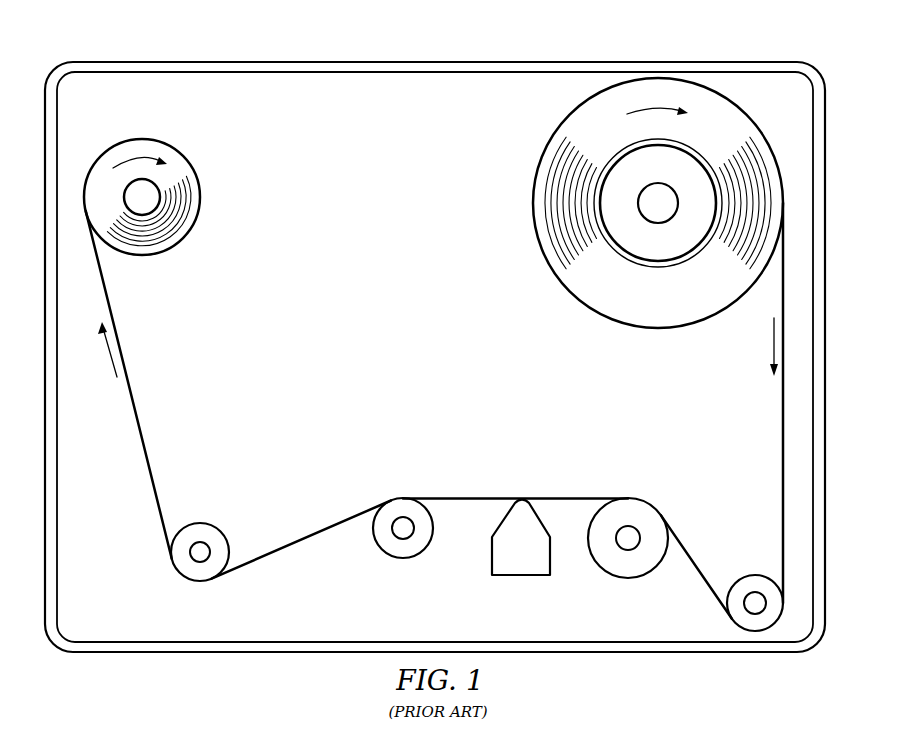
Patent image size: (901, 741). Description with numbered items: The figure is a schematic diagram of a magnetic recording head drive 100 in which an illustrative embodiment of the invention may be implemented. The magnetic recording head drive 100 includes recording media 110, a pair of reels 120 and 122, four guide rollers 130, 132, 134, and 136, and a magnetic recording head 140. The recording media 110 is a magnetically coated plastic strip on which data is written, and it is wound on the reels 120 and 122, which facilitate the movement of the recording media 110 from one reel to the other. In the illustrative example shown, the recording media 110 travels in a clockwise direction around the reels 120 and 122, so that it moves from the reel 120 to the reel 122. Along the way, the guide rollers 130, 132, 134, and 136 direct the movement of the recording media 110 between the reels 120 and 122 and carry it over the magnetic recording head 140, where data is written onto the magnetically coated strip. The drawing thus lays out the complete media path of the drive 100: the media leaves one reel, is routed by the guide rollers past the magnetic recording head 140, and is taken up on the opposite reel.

The magnetic recording head drive 100 is at (292, 56).
The recording media 110 is at (473, 498).
The reel 120 is at (653, 329).
The reel 122 is at (140, 138).
The guide roller 130 is at (755, 574).
The guide roller 132 is at (628, 579).
The guide roller 134 is at (403, 559).
The guide roller 136 is at (198, 522).
The magnetic recording head 140 is at (522, 576).